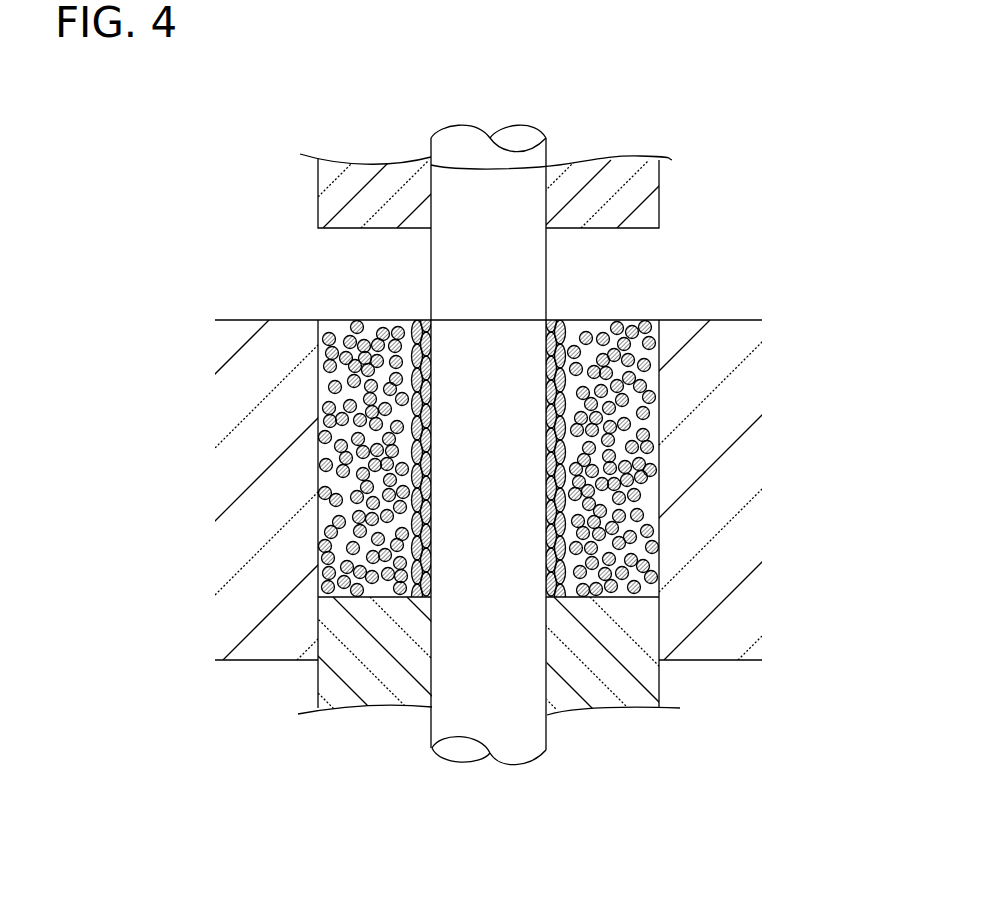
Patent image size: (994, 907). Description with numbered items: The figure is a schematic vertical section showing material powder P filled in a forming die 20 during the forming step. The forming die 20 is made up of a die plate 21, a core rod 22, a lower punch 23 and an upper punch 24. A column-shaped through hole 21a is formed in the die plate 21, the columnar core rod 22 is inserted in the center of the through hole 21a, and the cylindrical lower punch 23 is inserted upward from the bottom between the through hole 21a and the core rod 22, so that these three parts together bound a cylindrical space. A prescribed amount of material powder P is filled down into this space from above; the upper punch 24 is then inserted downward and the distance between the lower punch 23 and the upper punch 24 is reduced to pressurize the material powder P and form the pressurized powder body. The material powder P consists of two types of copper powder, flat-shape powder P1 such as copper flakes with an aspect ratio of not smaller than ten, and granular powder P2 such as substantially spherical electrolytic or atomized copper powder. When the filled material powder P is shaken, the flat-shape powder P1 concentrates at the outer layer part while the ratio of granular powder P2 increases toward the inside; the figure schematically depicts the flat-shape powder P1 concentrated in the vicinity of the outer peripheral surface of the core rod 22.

The forming die 20 is at (730, 215).
The die plate 21 is at (248, 330).
The through hole 21a is at (336, 325).
The core rod 22 is at (520, 745).
The lower punch 23 is at (368, 683).
The upper punch 24 is at (612, 168).
The material powder P is at (609, 322).
The flat-shape powder P1 is at (565, 322).
The granular powder P2 is at (389, 322).